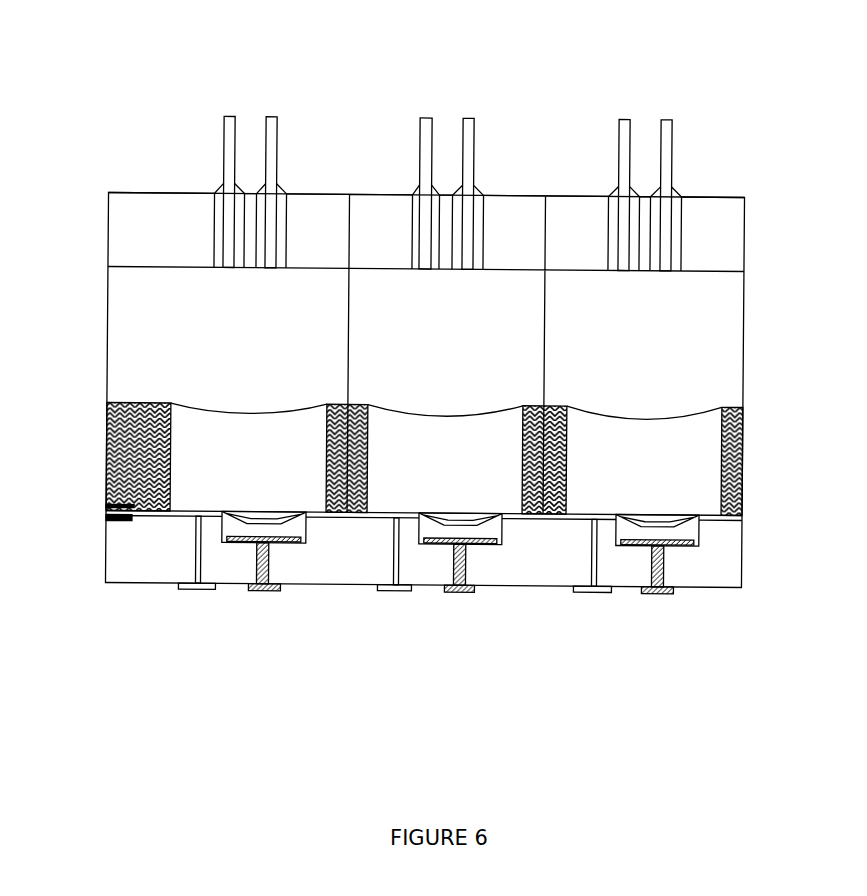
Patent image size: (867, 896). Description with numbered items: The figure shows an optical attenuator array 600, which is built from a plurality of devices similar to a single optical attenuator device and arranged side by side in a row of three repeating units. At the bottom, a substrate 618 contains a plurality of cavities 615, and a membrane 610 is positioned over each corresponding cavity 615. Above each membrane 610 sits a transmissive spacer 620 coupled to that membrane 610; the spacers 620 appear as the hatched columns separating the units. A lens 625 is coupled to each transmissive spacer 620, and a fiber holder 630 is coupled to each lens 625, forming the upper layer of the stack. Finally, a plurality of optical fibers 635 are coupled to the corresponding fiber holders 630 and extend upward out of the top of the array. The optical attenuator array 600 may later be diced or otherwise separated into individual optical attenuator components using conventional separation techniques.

The optical attenuator array 600 is at (125, 73).
The membrane 610 is at (270, 525).
The cavity 615 is at (240, 536).
The substrate 618 is at (345, 578).
The transmissive spacer 620 is at (107, 457).
The lens 625 is at (169, 308).
The fiber holder 630 is at (167, 236).
The optical fiber 635 is at (660, 118).